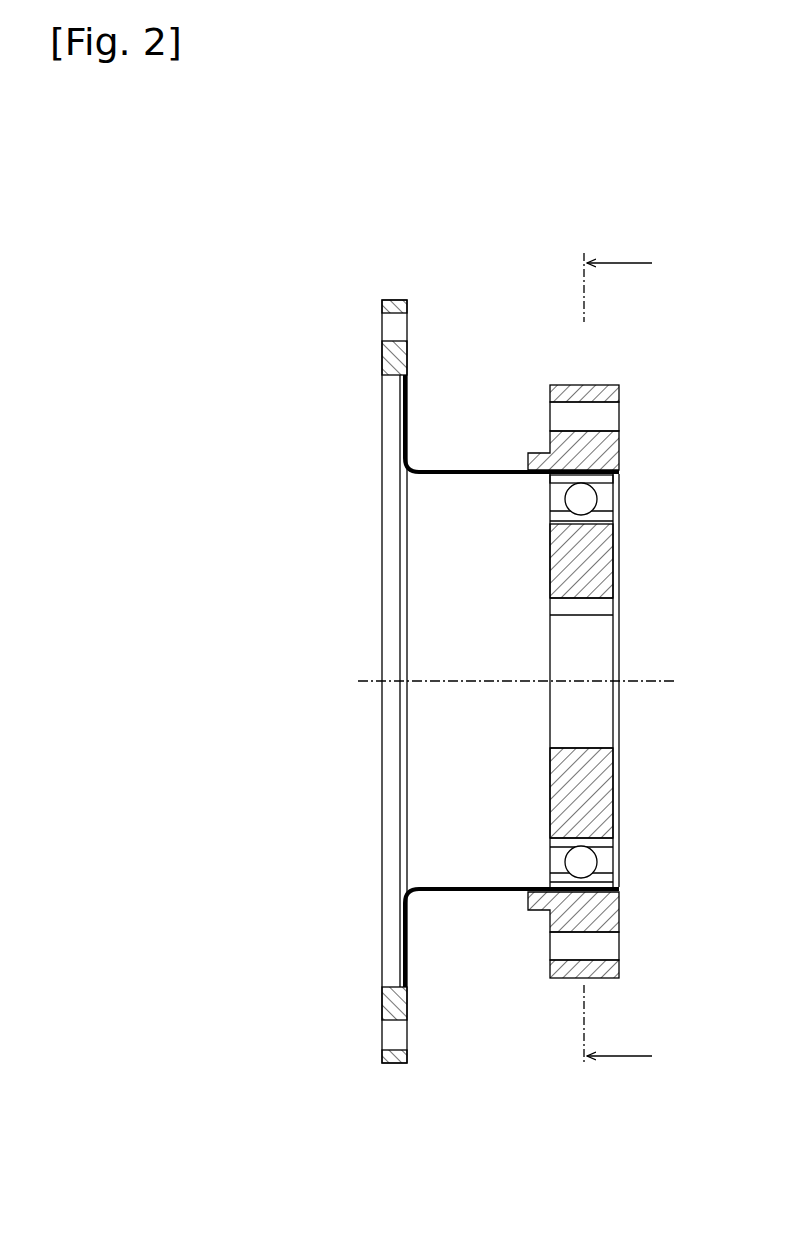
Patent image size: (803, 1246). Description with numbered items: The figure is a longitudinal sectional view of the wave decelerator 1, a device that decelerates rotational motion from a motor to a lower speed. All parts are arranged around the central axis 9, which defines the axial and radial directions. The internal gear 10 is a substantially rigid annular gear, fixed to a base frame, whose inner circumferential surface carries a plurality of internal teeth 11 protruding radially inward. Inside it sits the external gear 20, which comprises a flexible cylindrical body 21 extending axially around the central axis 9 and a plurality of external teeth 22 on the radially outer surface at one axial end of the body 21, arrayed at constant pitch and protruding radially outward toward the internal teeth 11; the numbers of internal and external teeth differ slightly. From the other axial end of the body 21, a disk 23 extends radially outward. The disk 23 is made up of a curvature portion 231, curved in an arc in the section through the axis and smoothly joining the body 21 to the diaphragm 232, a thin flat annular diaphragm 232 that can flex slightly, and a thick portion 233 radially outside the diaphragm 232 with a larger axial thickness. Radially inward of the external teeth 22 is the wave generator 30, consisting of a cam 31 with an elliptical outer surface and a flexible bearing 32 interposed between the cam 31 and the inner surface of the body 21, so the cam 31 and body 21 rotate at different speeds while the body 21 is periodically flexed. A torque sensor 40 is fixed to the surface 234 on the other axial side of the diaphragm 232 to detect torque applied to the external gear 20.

The wave decelerator 1 is at (467, 282).
The central axis 9 is at (652, 682).
The internal gear 10 is at (619, 445).
The internal teeth 11 is at (606, 480).
The external gear 20 is at (508, 650).
The body 21 is at (484, 476).
The external teeth 22 is at (575, 469).
The disk 23 is at (472, 650).
The curvature portion 231 is at (413, 466).
The diaphragm 232 is at (405, 405).
The thick portion 233 is at (398, 362).
The surface 234 is at (400, 438).
The wave generator 30 is at (634, 678).
The cam 31 is at (588, 560).
The flexible bearing 32 is at (583, 497).
The torque sensor 40 is at (350, 681).